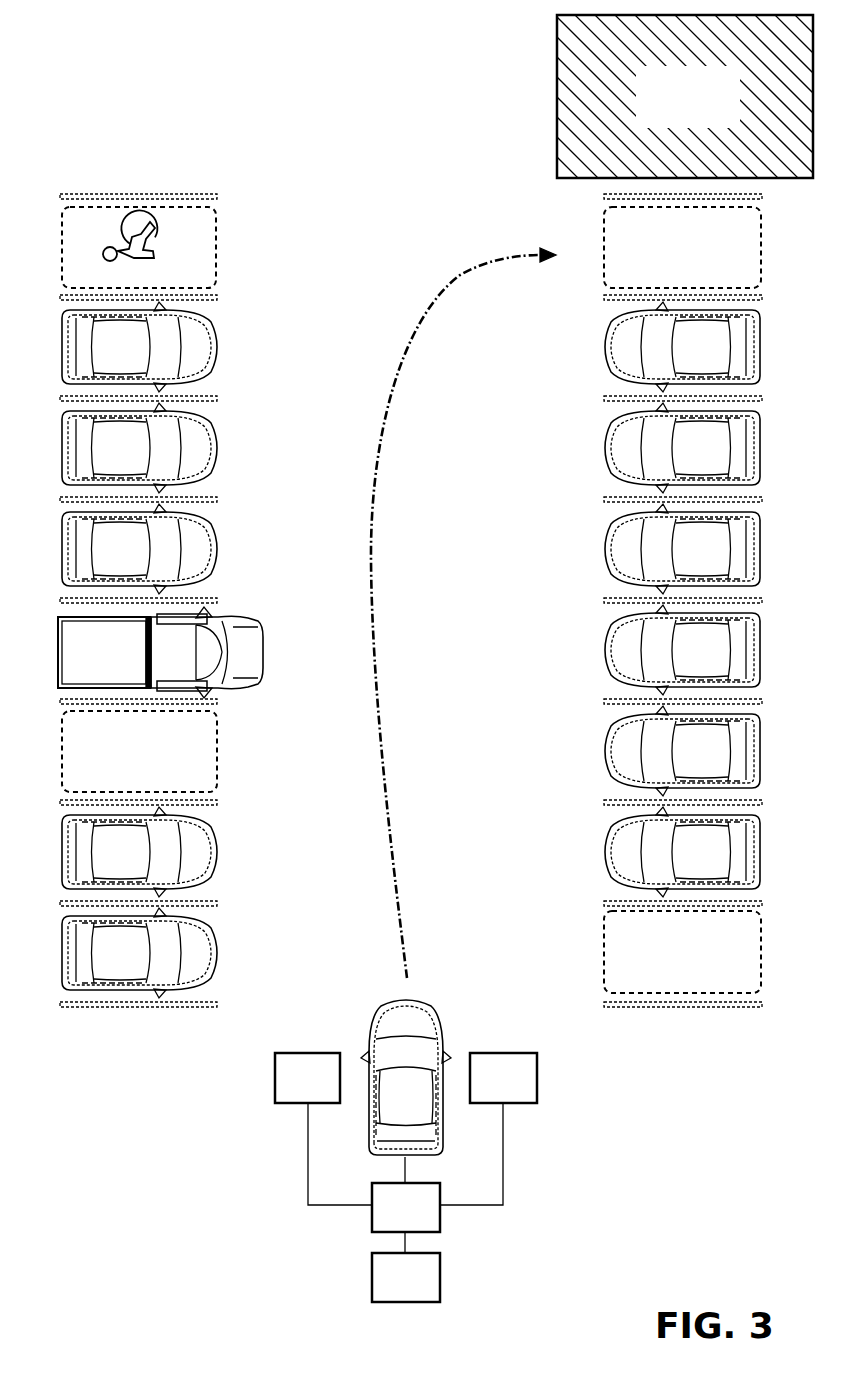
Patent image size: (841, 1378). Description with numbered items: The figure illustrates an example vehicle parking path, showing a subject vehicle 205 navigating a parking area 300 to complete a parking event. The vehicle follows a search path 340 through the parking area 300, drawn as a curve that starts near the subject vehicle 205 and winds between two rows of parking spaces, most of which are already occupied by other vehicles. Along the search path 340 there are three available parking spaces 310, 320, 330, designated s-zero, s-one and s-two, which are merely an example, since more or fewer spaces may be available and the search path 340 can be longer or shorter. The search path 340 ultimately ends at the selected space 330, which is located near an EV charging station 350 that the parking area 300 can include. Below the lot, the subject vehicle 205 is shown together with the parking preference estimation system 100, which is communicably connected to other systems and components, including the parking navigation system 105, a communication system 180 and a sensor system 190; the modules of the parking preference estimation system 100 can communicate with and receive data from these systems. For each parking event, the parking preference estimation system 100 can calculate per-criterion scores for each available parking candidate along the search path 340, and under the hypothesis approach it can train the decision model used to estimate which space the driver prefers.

The parking preference estimation system 100 is at (425, 1216).
The parking navigation system 105 is at (425, 1287).
The communication system 180 is at (523, 1088).
The sensor system 190 is at (327, 1088).
The subject vehicle 205 is at (425, 1101).
The parking area 300 is at (410, 599).
The parking space 310 is at (600, 938).
The parking space 320 is at (218, 740).
The parking space 330 is at (600, 230).
The search path 340 is at (398, 334).
The EV charging station 350 is at (703, 108).